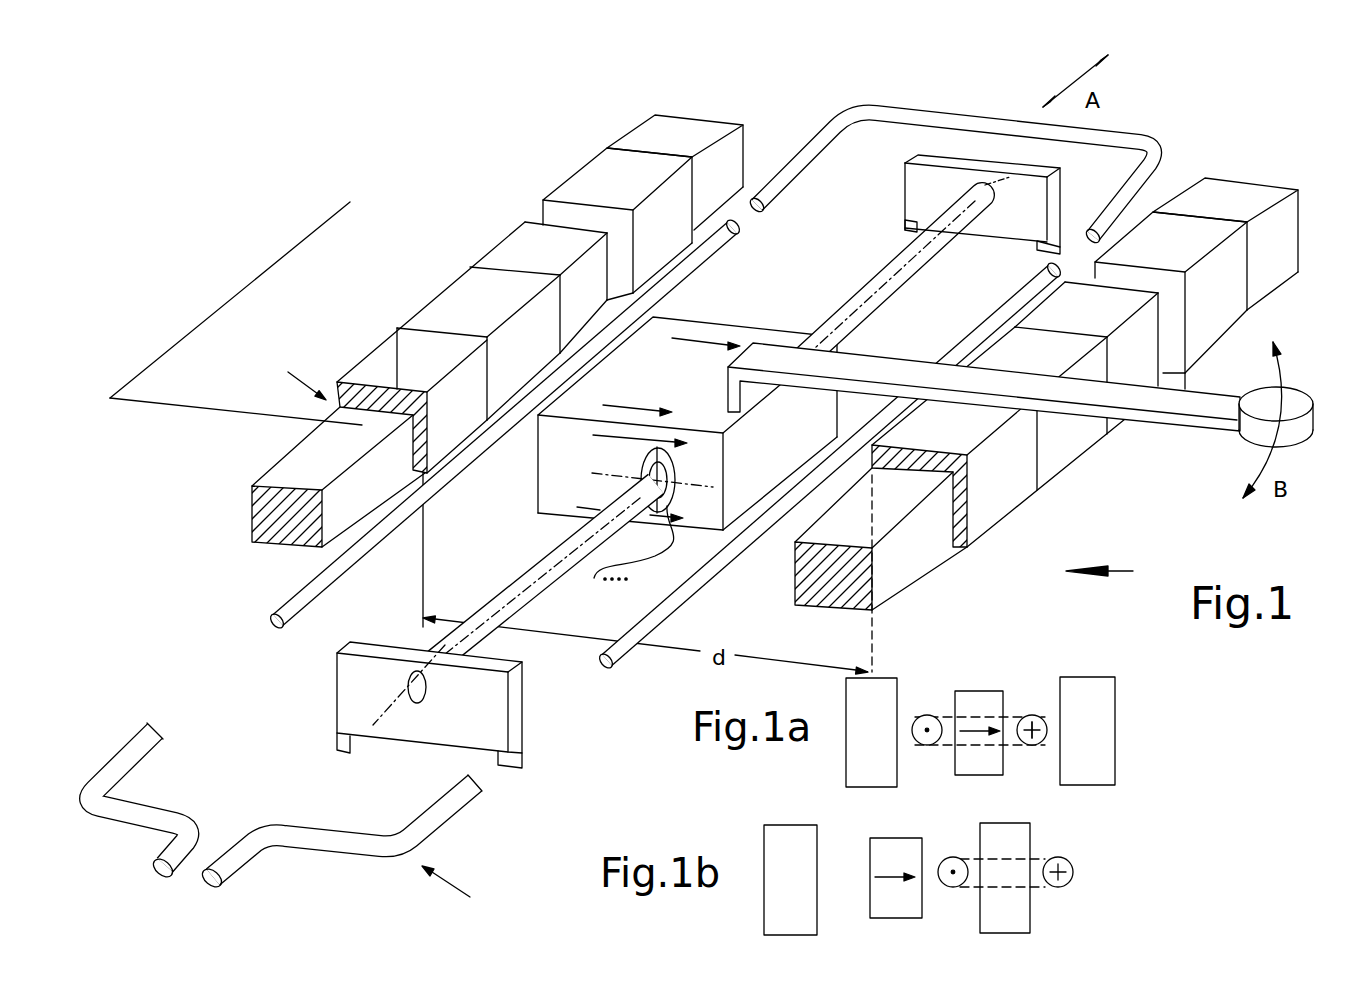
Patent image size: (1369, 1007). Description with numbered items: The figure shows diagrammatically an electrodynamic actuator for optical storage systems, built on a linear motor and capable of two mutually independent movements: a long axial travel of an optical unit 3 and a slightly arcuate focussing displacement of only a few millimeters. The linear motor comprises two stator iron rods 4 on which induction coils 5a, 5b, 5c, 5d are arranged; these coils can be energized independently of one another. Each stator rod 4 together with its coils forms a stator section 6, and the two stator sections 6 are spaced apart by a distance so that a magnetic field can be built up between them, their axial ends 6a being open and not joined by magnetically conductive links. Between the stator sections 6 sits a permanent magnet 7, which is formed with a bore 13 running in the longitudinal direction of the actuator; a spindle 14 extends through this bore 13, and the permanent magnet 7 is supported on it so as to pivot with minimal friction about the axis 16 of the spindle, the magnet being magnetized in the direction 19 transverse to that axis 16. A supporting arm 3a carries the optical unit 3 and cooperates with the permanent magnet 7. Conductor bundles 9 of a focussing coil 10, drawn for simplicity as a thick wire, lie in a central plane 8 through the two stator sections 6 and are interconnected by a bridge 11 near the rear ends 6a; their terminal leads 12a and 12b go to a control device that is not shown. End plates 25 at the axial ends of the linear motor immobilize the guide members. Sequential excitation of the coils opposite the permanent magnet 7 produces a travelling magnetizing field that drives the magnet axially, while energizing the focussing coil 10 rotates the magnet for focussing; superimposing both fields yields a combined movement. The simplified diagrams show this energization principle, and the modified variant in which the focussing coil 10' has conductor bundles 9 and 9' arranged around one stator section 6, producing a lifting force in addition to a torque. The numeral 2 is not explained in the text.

In FIG. 1, the carriage 2 is at (470, 265).
In FIG. 1, the optical unit 3 is at (1288, 398).
In FIG. 1, the supporting arm 3a is at (1180, 405).
In FIG. 1, the stator iron rod 4 is at (250, 500).
In FIG. 1, the induction coil 5a is at (357, 393).
In FIG. 1, the induction coil 5b is at (443, 308).
In FIG. 1, the induction coil 5c is at (507, 250).
In FIG. 1, the induction coil 5d is at (600, 167).
In FIG. 1, the stator section 6 is at (283, 377).
In FIG. 1A, the stator section 6 is at (1113, 720).
In FIG. 1B, the stator section 6 is at (812, 915).
In FIG. 1, the axial end 6a is at (672, 112).
In FIG. 1, the permanent magnet 7 is at (720, 328).
In FIG. 1A, the permanent magnet 7 is at (983, 702).
In FIG. 1B, the permanent magnet 7 is at (913, 917).
In FIG. 1, the central plane 8 is at (190, 330).
In FIG. 1, the conductor bundle 9 is at (665, 444).
In FIG. 1A, the conductor bundle 9 is at (982, 697).
In FIG. 1B, the conductor bundle 9 is at (991, 848).
In FIG. 1B, the conductor bundle 9' is at (1074, 872).
In FIG. 1, the focussing coil 10 is at (464, 888).
In FIG. 1A, the focussing coil 10 is at (1026, 712).
In FIG. 1B, the focussing coil 10' is at (1062, 851).
In FIG. 1, the bridge 11 is at (898, 115).
In FIG. 1, the terminal lead 12a is at (177, 848).
In FIG. 1, the terminal lead 12b is at (253, 850).
In FIG. 1, the bore 13 is at (674, 475).
In FIG. 1, the spindle 14 is at (543, 590).
In FIG. 1, the axis 16 is at (557, 563).
In FIG. 1, the magnetization direction 19 is at (635, 405).
In FIG. 1, the end plate 25 is at (1013, 227).